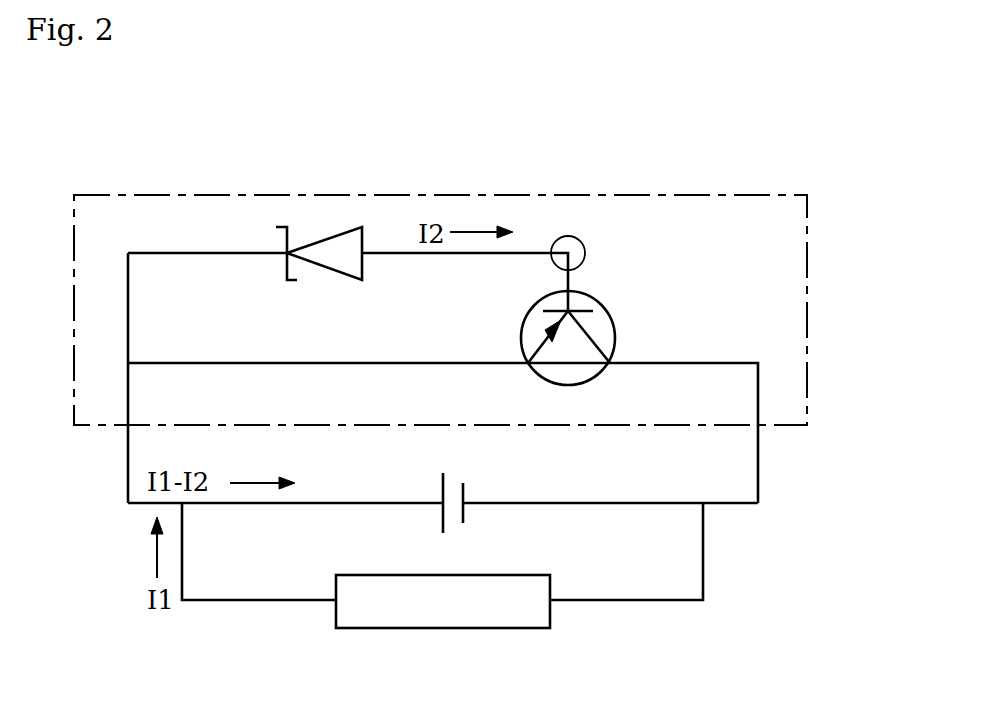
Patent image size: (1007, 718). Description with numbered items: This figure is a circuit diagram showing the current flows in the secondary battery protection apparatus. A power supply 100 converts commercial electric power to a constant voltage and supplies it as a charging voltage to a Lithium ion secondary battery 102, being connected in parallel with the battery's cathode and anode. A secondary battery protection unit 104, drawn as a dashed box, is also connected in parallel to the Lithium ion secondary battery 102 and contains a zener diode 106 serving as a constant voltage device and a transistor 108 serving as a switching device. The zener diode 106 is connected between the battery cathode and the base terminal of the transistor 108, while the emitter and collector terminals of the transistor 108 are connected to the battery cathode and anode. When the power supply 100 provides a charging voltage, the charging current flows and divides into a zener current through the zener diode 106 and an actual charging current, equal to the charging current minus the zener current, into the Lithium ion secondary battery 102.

The power supply 100 is at (510, 628).
The Lithium ion secondary battery 102 is at (432, 517).
The secondary battery protection unit 104 is at (808, 315).
The zener diode 106 is at (324, 233).
The transistor 108 is at (616, 325).